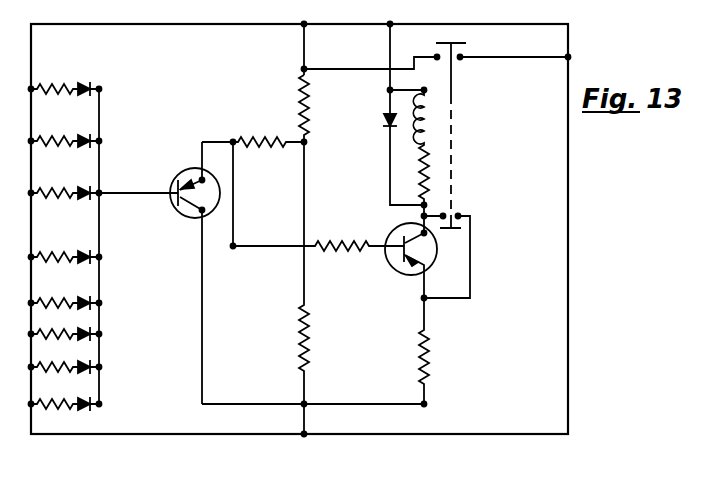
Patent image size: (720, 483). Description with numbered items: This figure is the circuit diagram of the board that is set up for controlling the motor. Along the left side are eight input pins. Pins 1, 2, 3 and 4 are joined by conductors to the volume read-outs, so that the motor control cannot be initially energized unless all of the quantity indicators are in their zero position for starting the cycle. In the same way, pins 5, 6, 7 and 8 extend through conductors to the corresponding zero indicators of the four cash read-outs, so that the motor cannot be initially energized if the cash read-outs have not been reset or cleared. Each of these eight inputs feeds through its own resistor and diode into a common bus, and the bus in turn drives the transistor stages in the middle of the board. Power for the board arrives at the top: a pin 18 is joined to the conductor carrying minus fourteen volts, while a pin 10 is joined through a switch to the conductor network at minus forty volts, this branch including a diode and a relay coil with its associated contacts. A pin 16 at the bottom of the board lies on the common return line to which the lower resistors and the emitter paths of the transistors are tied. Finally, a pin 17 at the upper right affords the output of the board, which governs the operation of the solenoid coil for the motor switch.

The pin 1 is at (31, 89).
The pin 2 is at (31, 141).
The pin 3 is at (31, 193).
The pin 4 is at (31, 257).
The pin 5 is at (31, 303).
The pin 6 is at (31, 334).
The pin 7 is at (31, 367).
The pin 8 is at (31, 404).
The pin 10 is at (390, 24).
The common return terminal 16 is at (303, 435).
The pin 17 is at (568, 57).
The pin 18 is at (304, 24).